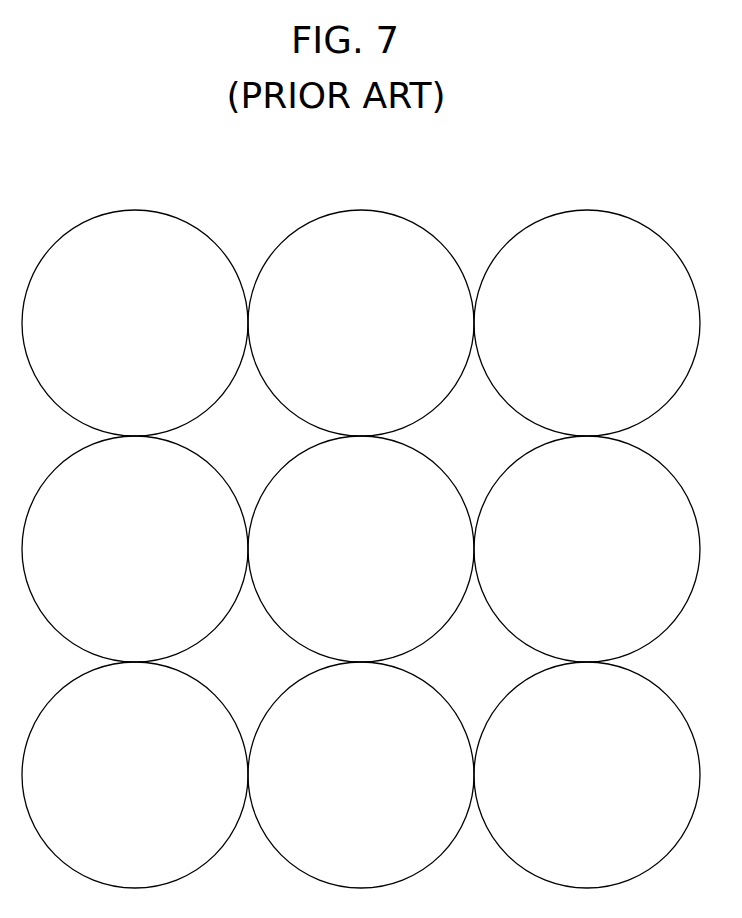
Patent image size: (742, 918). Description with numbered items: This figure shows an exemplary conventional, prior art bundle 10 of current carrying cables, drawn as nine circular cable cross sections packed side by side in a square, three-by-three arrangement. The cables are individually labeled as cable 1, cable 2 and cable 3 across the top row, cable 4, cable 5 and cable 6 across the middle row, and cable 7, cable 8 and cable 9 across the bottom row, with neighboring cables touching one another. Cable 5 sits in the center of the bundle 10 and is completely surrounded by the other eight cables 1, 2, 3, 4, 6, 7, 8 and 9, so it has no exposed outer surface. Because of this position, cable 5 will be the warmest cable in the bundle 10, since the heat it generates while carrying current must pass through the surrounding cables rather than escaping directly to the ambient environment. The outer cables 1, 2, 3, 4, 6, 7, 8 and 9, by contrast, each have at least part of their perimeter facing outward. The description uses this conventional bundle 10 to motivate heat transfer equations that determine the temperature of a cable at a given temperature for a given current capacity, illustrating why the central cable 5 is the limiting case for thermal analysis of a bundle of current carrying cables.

The bundle 10 is at (545, 137).
The current carrying cable 1 is at (135, 323).
The current carrying cable 2 is at (361, 323).
The current carrying cable 3 is at (587, 323).
The current carrying cable 4 is at (135, 549).
The current carrying cable 5 is at (361, 549).
The current carrying cable 6 is at (587, 549).
The current carrying cable 7 is at (135, 775).
The current carrying cable 8 is at (361, 775).
The current carrying cable 9 is at (587, 775).